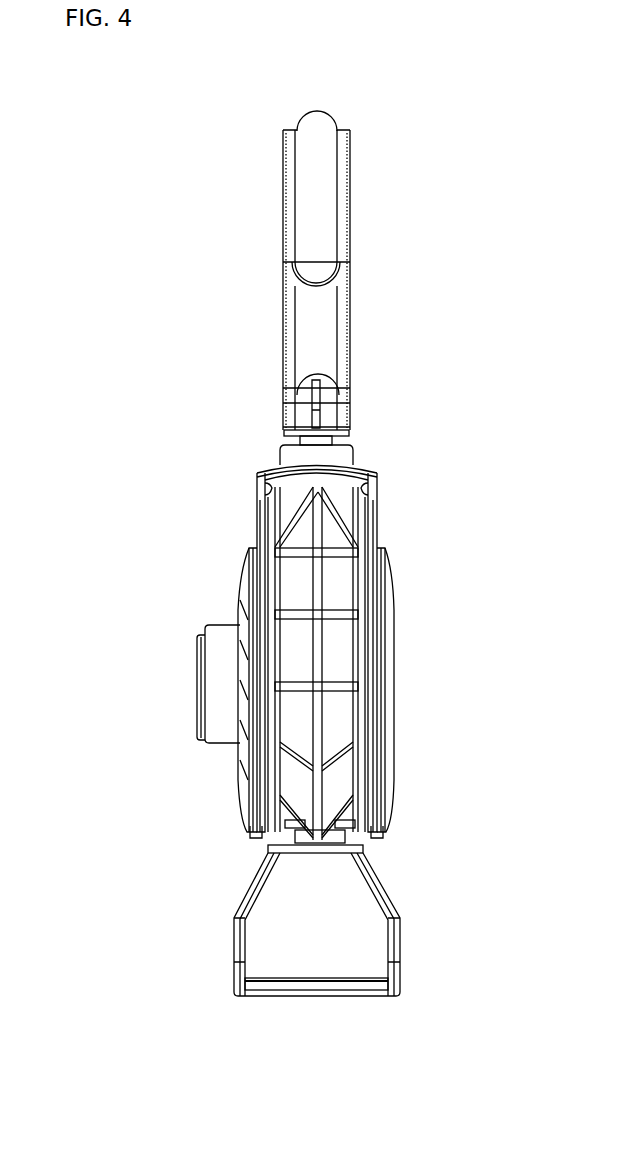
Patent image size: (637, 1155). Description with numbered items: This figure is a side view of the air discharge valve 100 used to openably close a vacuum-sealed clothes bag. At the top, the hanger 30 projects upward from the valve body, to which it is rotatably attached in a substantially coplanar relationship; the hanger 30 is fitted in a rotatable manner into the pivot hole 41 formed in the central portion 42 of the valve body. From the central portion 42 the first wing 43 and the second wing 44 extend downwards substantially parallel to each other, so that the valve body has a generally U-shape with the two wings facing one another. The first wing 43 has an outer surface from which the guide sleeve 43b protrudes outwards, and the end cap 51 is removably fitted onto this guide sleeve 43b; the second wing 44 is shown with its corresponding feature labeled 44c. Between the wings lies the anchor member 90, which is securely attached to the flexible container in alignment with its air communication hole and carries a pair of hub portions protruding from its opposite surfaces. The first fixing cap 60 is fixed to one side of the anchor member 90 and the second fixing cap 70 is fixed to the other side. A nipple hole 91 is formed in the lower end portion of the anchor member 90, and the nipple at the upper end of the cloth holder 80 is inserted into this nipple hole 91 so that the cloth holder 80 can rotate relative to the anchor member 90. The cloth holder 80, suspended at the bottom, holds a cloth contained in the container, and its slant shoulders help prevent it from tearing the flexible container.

The air discharge valve 100 is at (168, 197).
The hanger 30 is at (310, 125).
The pivot hole 41 is at (283, 432).
The central portion 42 is at (280, 463).
The first wing 43 is at (262, 540).
The guide sleeve 43b is at (262, 480).
The second wing 44 is at (374, 530).
The right frame corner 44c is at (366, 470).
The anchor member 90 is at (333, 592).
The end cap 51 is at (196, 683).
The first fixing cap 60 is at (265, 810).
The second fixing cap 70 is at (368, 810).
The nipple hole 91 is at (350, 837).
The cloth holder 80 is at (393, 998).